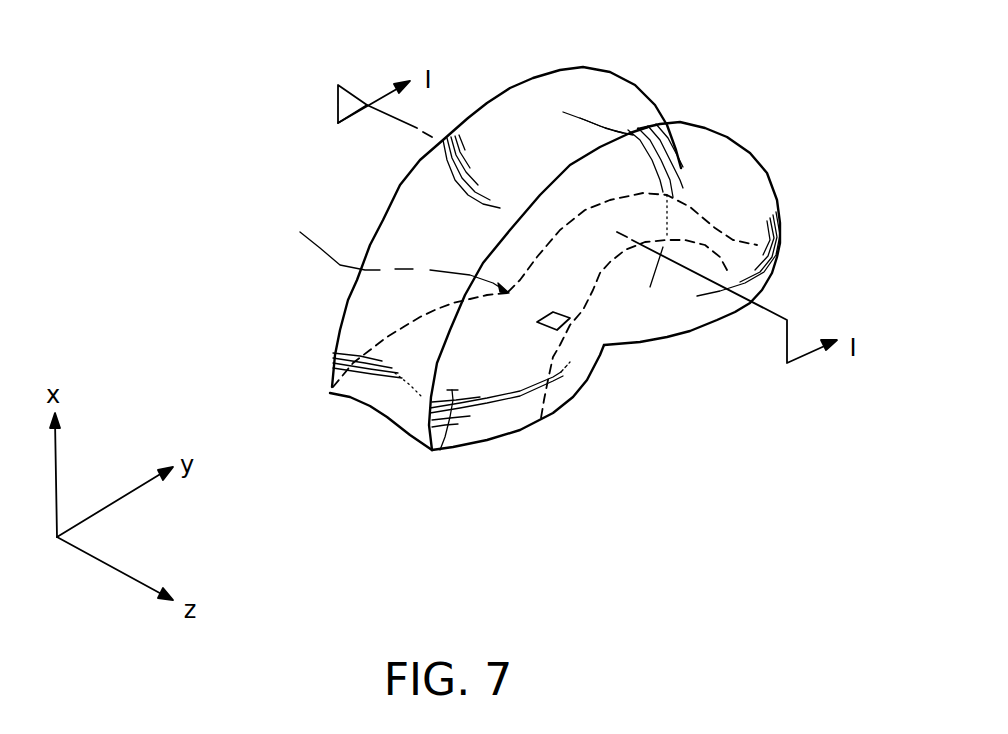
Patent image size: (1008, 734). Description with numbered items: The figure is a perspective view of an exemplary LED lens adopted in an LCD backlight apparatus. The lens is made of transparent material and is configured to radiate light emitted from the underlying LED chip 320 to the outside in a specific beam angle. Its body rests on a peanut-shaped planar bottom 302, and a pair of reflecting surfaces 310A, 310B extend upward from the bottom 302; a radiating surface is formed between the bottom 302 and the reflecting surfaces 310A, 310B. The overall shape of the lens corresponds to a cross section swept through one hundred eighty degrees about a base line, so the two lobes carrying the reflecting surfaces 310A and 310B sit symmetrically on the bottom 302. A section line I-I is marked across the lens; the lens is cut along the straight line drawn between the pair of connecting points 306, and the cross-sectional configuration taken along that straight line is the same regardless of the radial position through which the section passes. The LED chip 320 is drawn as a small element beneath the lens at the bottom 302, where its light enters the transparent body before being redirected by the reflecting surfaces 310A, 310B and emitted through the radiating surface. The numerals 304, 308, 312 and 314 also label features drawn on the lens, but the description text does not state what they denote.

The planar bottom 302 is at (516, 371).
The second end surface 304 is at (799, 254).
The connecting points 306 is at (458, 330).
The first end surface 308 is at (358, 446).
The reflecting surface 310A is at (451, 232).
The reflecting surface 310B is at (644, 270).
The junction between lens portions 312 is at (658, 160).
The groove 314 is at (510, 439).
The LED chip 320 is at (511, 430).